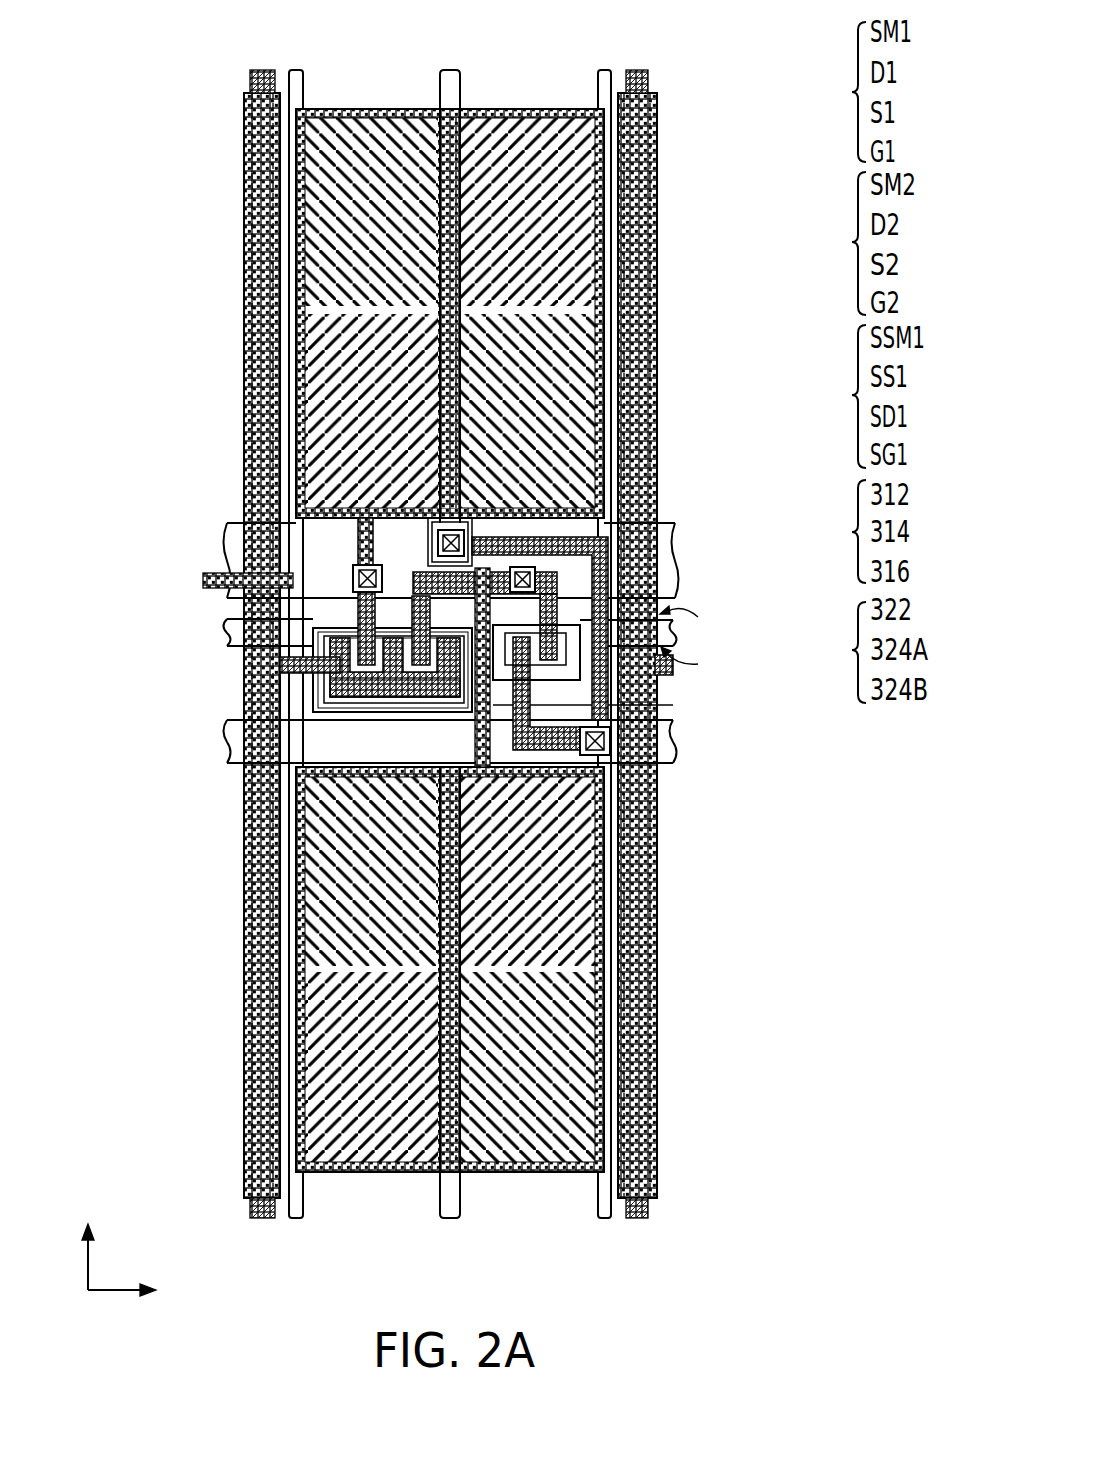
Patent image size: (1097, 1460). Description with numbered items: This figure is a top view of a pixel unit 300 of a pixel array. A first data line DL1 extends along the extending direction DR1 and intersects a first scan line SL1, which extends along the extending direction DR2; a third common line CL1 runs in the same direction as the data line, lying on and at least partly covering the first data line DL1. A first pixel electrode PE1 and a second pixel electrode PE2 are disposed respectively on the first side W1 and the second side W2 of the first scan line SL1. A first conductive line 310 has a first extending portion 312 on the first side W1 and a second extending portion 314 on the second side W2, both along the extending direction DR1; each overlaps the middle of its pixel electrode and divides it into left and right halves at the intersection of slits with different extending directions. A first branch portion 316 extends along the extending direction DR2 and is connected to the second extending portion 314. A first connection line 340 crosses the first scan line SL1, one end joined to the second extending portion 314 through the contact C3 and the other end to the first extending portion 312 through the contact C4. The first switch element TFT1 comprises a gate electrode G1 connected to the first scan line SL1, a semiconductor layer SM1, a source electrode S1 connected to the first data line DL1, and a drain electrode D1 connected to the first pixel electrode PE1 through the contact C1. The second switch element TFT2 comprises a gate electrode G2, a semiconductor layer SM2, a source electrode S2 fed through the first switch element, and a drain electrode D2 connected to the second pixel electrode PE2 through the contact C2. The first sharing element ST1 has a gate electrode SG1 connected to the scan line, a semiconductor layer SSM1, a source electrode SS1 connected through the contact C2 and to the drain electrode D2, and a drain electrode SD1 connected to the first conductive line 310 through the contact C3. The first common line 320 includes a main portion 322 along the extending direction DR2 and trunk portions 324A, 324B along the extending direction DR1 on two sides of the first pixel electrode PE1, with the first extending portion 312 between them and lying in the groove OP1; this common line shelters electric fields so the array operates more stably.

The first data line DL1 is at (262, 80).
The third common line CL1 is at (256, 383).
The first extending portion 312 is at (449, 82).
The second extending portion 314 is at (450, 1200).
The first branch portion 316 is at (237, 757).
The first conductive line 310 is at (836, 531).
The first common line 320 is at (836, 652).
The main portion 322 is at (233, 576).
The trunk portion 324A is at (293, 266).
The trunk portion 324B is at (608, 330).
The first pixel electrode PE1 is at (317, 212).
The second pixel electrode PE2 is at (320, 908).
The first connection line 340 is at (645, 612).
The first switch element TFT1 is at (830, 92).
The second switch element TFT2 is at (830, 243).
The first sharing element ST1 is at (836, 396).
The semiconductor layer SM1 is at (345, 702).
The semiconductor layer SM2 is at (330, 660).
The drain electrode D1 is at (425, 628).
The drain electrode D2 is at (418, 625).
The source electrode S1 is at (455, 660).
The source electrode S2 is at (452, 703).
The gate electrode G1 is at (440, 702).
The gate electrode G2 is at (445, 758).
The first scan line SL1 is at (330, 665).
The semiconductor layer SSM1 is at (547, 668).
The source electrode SS1 is at (550, 635).
The drain electrode SD1 is at (560, 745).
The gate electrode SG1 is at (535, 690).
The contact C1 is at (355, 578).
The contact C2 is at (536, 579).
The contact C3 is at (610, 742).
The contact C4 is at (438, 543).
The groove OP1 is at (473, 563).
The first side W1 is at (695, 614).
The second side W2 is at (692, 661).
The pixel unit 300 is at (770, 1281).
The extending direction DR1 is at (90, 1237).
The extending direction DR2 is at (150, 1294).